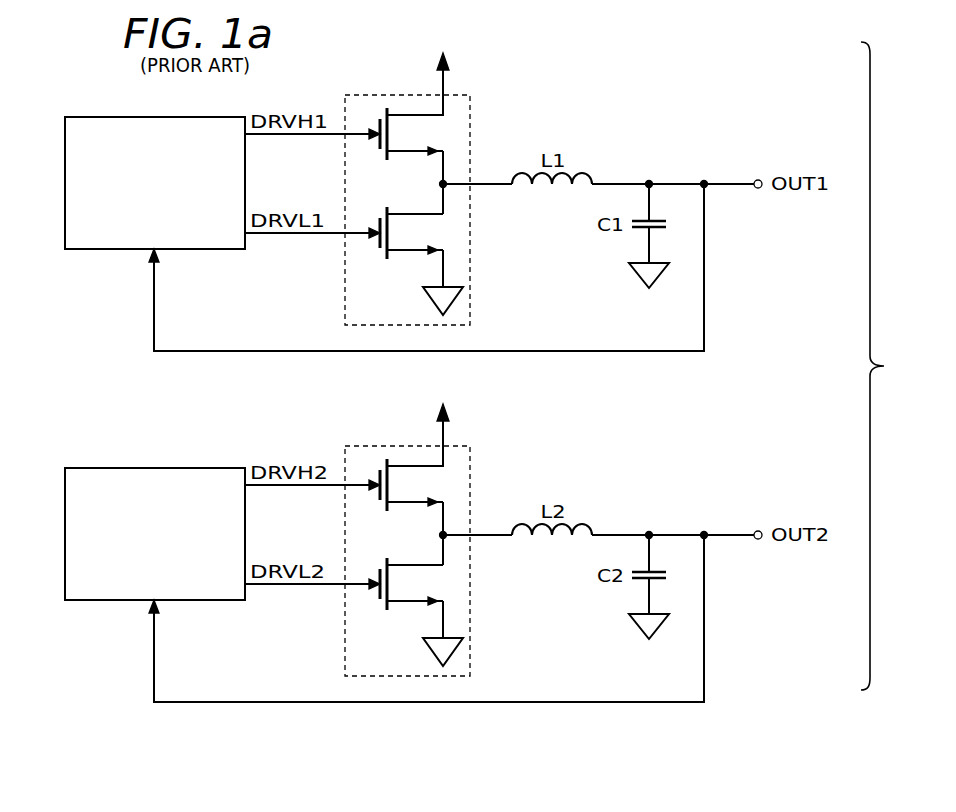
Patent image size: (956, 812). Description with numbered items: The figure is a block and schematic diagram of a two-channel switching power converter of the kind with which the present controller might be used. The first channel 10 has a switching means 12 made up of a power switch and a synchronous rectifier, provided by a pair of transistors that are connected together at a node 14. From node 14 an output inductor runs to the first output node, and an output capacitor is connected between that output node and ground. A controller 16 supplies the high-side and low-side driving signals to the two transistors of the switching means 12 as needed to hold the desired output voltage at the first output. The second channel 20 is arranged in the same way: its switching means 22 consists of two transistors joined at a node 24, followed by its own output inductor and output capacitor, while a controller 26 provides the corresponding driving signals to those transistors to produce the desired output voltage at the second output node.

The first channel 10 is at (60, 117).
The switching means 12 is at (470, 108).
The node 14 is at (440, 184).
The controller 16 is at (198, 249).
The second channel 20 is at (124, 534).
The switching means 22 is at (445, 528).
The node 24 is at (436, 535).
The controller 26 is at (214, 626).